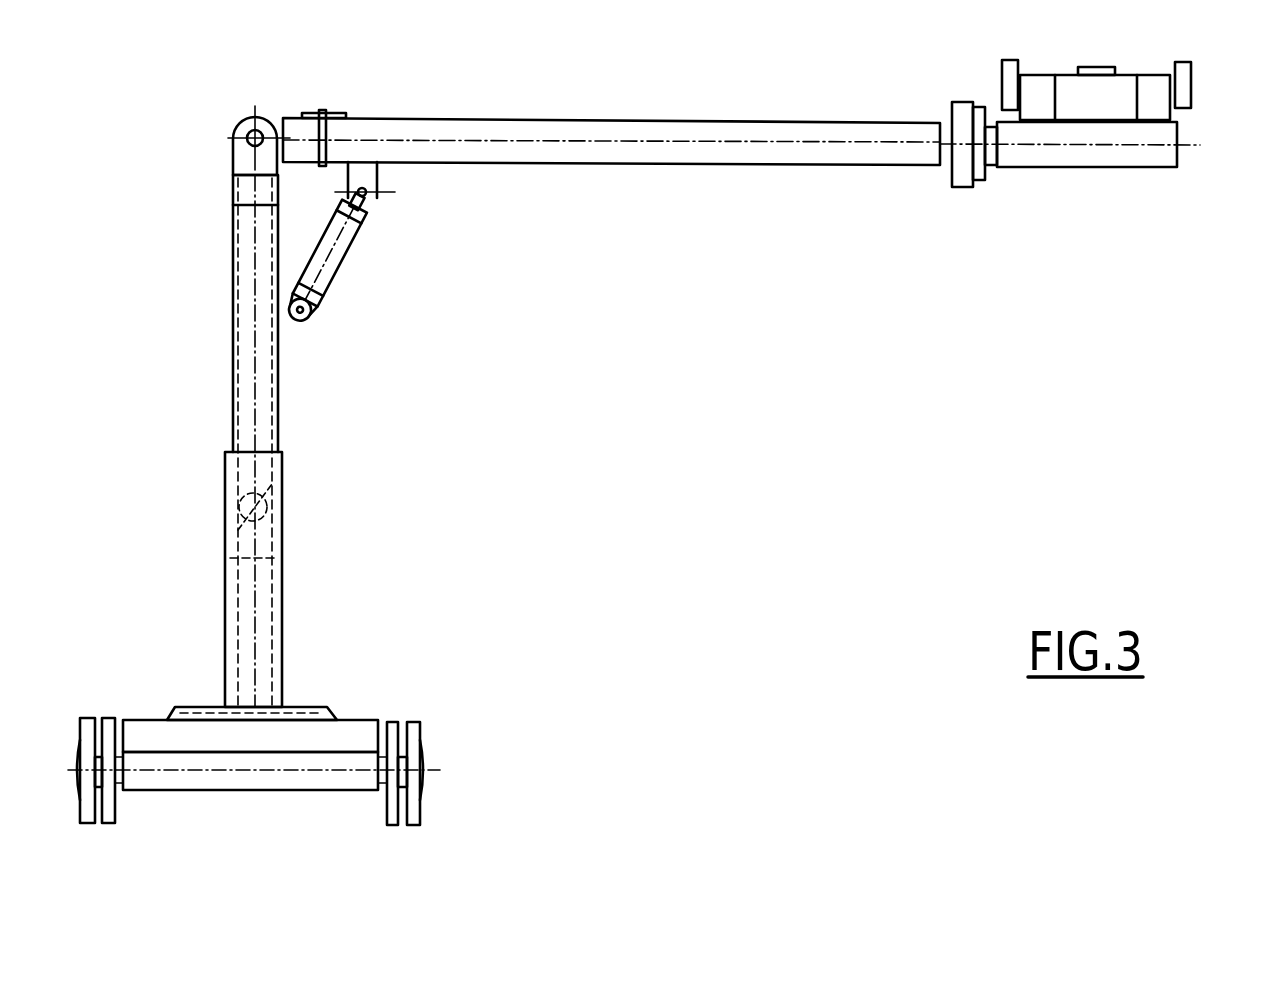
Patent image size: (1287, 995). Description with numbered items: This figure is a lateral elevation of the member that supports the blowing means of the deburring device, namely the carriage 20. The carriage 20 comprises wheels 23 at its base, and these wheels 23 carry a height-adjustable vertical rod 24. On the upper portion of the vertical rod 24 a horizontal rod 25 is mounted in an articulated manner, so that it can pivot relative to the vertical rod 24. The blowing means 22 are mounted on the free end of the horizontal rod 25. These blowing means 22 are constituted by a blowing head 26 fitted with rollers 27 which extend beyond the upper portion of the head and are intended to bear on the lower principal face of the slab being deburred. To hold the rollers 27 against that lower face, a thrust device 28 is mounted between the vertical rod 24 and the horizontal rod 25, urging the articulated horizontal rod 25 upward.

The carriage 20 is at (414, 694).
The blowing means 22 is at (1145, 33).
The wheels 23 is at (87, 812).
The vertical rod 24 is at (265, 410).
The horizontal rod 25 is at (773, 150).
The blowing head 26 is at (1162, 116).
The rollers 27 is at (1000, 80).
The thrust device 28 is at (332, 263).